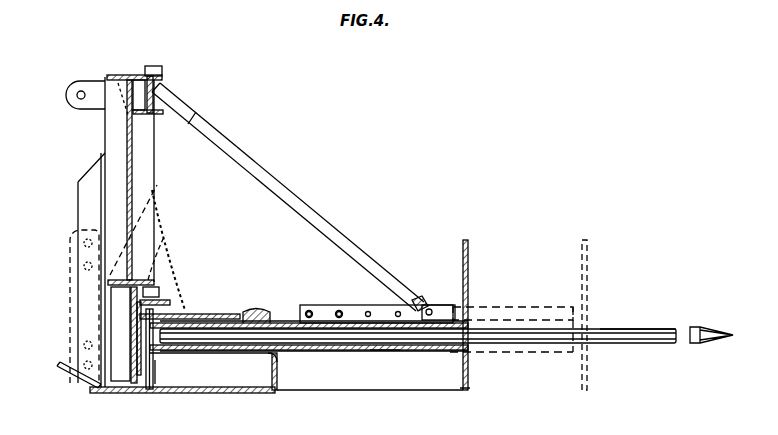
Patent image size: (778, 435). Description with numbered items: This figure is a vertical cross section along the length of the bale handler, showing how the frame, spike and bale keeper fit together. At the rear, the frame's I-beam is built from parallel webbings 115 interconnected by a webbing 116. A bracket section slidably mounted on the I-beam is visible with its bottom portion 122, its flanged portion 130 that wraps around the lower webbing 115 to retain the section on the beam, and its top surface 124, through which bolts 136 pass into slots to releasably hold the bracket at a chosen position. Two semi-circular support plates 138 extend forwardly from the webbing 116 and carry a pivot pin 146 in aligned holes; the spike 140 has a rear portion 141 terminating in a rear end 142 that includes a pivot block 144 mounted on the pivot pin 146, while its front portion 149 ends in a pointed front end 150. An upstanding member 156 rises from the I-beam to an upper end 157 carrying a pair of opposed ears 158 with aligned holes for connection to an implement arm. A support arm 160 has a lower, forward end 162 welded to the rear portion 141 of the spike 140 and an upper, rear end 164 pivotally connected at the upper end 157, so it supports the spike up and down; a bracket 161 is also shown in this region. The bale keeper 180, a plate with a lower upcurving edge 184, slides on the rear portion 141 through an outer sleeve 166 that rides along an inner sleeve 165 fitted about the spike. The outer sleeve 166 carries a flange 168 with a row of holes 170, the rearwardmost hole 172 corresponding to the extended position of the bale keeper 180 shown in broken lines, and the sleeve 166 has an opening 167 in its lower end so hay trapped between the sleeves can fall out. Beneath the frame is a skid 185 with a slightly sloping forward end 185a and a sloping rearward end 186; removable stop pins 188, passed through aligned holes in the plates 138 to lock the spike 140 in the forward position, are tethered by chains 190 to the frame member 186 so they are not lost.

The parallel webbings 115 is at (160, 282).
The webbing 116 is at (133, 345).
The bottom portion 122 is at (120, 385).
The top surface 124 is at (178, 240).
The flanged portion 130 is at (178, 390).
The bolts 136 is at (165, 294).
The semi-circular support plates 138 is at (238, 312).
The spike 140 is at (648, 352).
The rear portion 141 is at (282, 320).
The rear end 142 is at (178, 305).
The pivot block 144 is at (133, 322).
The pivot pin 146 is at (160, 345).
The front portion 149 is at (636, 328).
The pointed front end 150 is at (718, 327).
The upstanding member 156 is at (140, 152).
The upper end 157 is at (128, 76).
The ears 158 is at (76, 82).
The support arm 160 is at (262, 165).
The brace bracket 161 is at (158, 92).
The lower forward end 162 is at (436, 306).
The upper rear end 164 is at (191, 118).
The inner sleeve 165 is at (290, 351).
The outer sleeve 166 is at (514, 360).
The opening 167 is at (384, 350).
The flange 168 is at (380, 304).
The holes 170 is at (339, 318).
The rearwardmost hole 172 is at (309, 310).
The bale keeper 180 is at (469, 262).
The lower upcurving edge 184 is at (466, 390).
The skid 185 is at (236, 392).
The forward end 185a is at (280, 380).
The sloping rearward end 186 is at (160, 205).
The stop pins 188 is at (256, 312).
The chains 190 is at (172, 218).